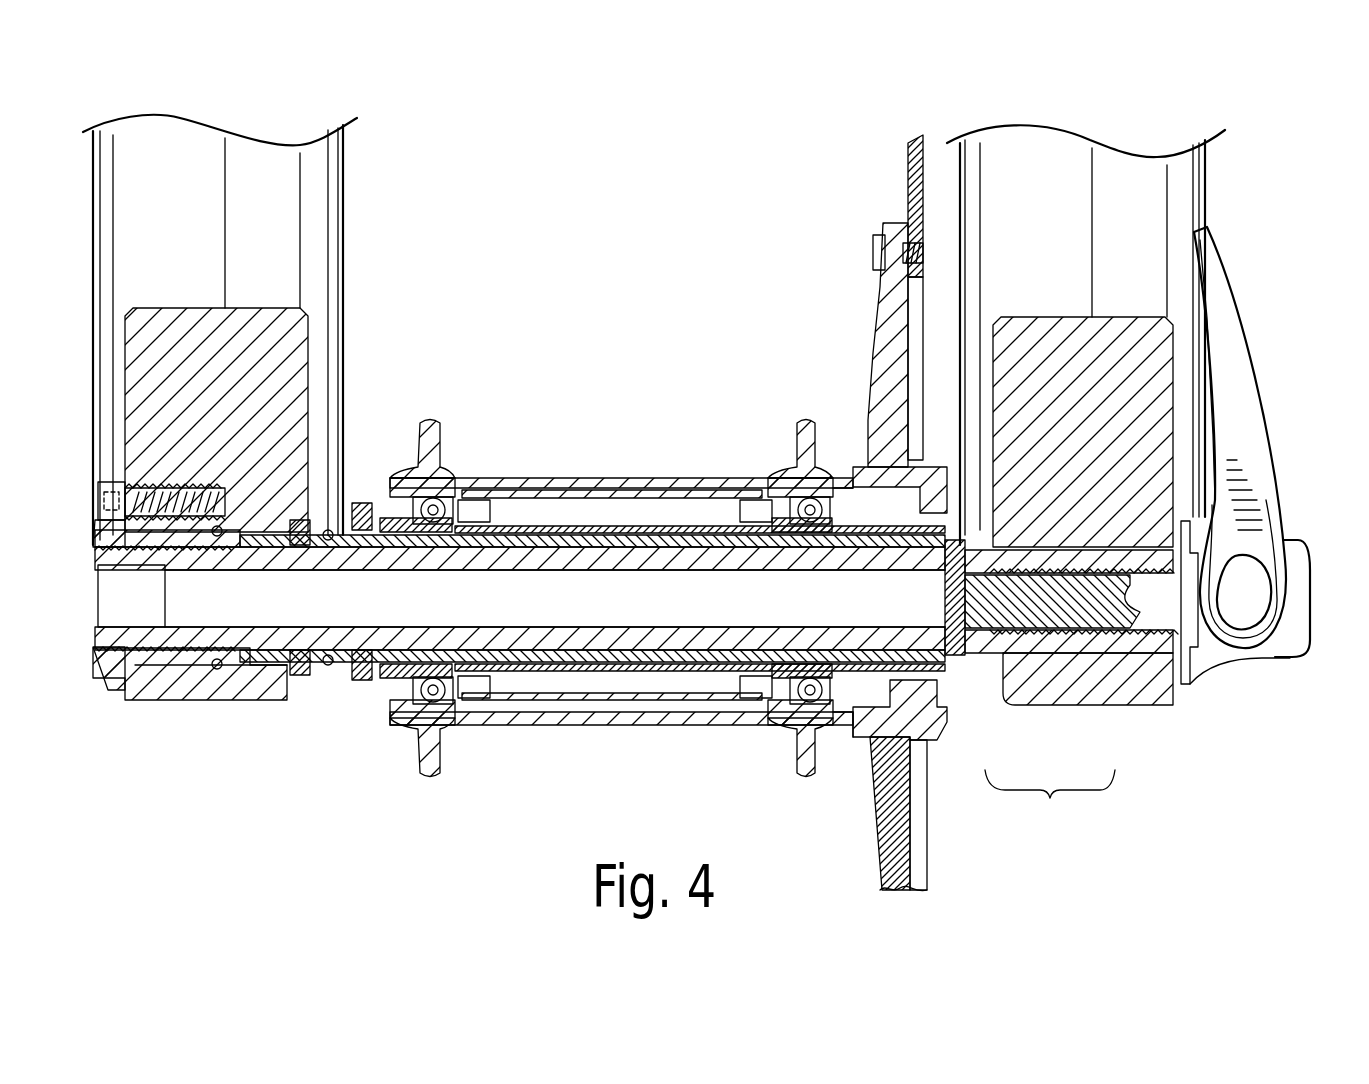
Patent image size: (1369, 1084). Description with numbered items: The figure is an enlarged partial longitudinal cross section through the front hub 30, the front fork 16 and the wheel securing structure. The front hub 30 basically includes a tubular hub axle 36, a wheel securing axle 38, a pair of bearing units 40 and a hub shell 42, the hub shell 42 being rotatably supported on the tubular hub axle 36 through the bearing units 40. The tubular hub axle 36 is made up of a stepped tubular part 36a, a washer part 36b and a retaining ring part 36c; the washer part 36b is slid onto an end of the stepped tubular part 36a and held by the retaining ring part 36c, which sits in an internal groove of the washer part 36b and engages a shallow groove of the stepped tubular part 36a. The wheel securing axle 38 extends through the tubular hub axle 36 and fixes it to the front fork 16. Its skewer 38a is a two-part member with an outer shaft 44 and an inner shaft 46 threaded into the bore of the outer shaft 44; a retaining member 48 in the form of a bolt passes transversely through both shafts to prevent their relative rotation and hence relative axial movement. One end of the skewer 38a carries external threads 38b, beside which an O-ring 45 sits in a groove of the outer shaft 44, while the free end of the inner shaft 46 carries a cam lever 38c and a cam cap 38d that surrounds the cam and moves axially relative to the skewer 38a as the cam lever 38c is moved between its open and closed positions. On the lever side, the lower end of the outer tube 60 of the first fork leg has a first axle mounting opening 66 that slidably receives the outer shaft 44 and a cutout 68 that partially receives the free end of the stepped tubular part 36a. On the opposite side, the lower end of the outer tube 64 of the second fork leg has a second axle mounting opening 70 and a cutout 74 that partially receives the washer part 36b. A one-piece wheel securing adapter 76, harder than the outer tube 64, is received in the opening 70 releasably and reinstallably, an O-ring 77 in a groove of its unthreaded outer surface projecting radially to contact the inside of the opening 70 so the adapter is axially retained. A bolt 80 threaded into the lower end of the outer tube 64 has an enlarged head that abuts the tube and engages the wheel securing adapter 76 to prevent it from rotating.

The front fork 16 is at (1246, 164).
The outer tube 64 is at (345, 200).
The outer tube 60 is at (1212, 208).
The cutout 68 is at (990, 470).
The cam lever 38c is at (1240, 352).
The front hub 30 is at (676, 322).
The hub shell 42 is at (612, 478).
The bearing units 40 is at (477, 510).
The cutout 74 is at (315, 530).
The bolt 80 is at (108, 475).
The external threads 38b is at (95, 545).
The O-ring 45 is at (165, 672).
The O-ring 77 is at (218, 670).
The second axle mounting opening 70 is at (262, 645).
The washer part 36b is at (300, 662).
The retaining ring part 36c is at (328, 666).
The stepped tubular part 36a is at (355, 665).
The wheel securing adapter 76 is at (96, 680).
The tubular hub axle 36 is at (868, 738).
The retaining member 48 is at (952, 676).
The inner shaft 46 is at (1020, 628).
The outer shaft 44 is at (1060, 642).
The first axle mounting opening 66 is at (1133, 648).
The skewer 38a is at (1050, 801).
The cam cap 38d is at (1273, 652).
The wheel securing axle 38 is at (1322, 660).